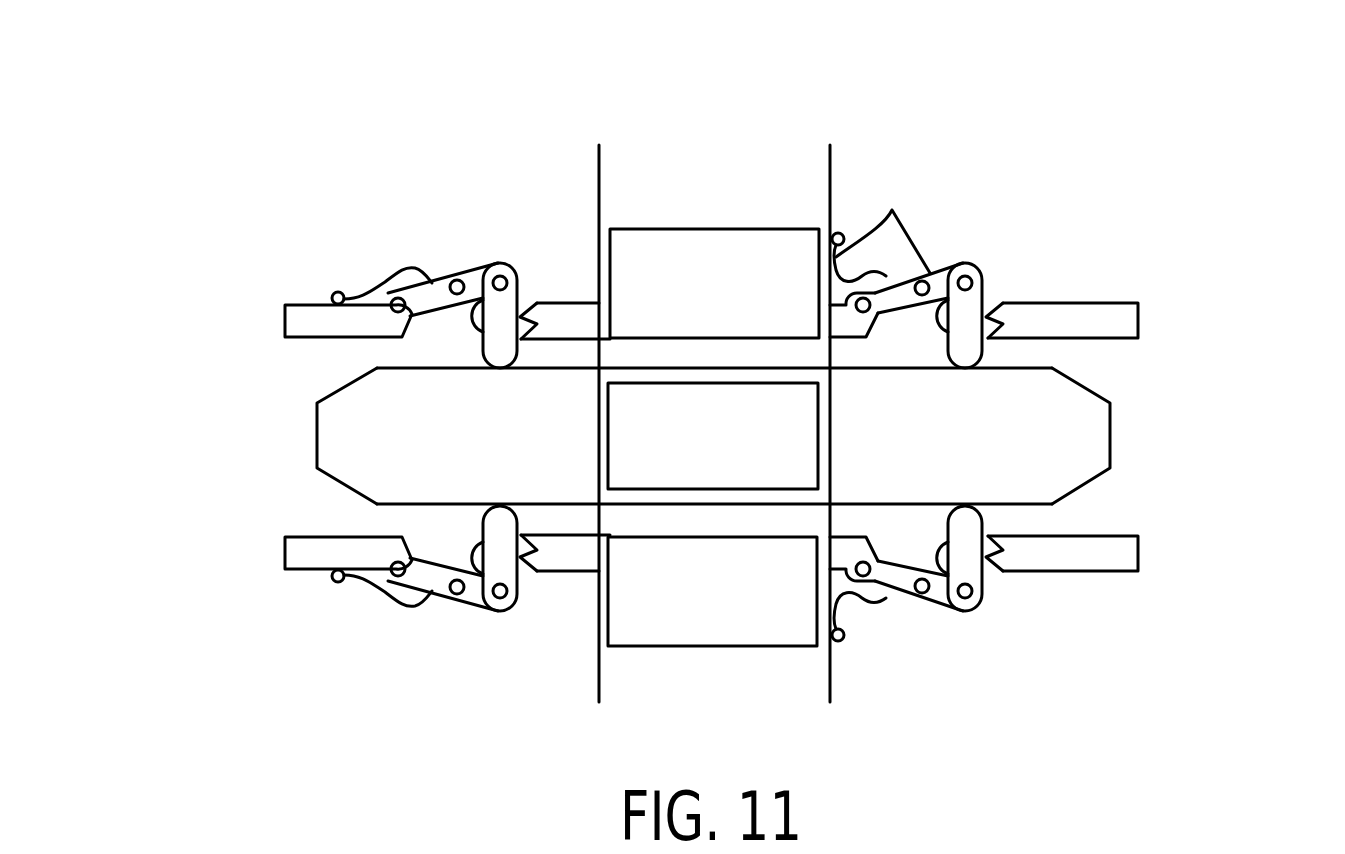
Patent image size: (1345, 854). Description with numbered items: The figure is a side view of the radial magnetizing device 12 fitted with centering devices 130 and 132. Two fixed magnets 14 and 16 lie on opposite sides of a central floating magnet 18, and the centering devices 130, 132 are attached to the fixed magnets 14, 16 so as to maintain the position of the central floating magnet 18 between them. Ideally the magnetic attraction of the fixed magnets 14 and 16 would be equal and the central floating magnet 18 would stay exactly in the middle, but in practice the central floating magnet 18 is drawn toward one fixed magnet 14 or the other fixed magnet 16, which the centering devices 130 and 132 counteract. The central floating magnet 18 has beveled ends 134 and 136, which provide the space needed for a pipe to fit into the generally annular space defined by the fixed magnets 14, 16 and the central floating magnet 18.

The radial magnetizing device 12 is at (972, 118).
The fixed magnet 14 is at (609, 268).
The fixed magnet 16 is at (780, 648).
The central floating magnet 18 is at (520, 449).
The centering device 130 is at (285, 320).
The centering device 132 is at (1138, 557).
The beveled end 134 is at (317, 422).
The beveled end 136 is at (1082, 483).